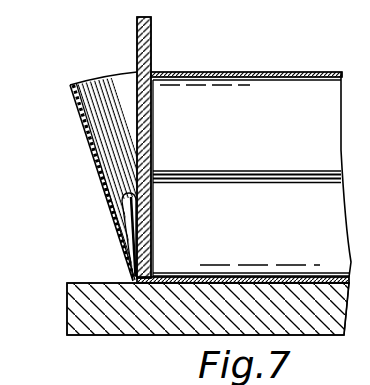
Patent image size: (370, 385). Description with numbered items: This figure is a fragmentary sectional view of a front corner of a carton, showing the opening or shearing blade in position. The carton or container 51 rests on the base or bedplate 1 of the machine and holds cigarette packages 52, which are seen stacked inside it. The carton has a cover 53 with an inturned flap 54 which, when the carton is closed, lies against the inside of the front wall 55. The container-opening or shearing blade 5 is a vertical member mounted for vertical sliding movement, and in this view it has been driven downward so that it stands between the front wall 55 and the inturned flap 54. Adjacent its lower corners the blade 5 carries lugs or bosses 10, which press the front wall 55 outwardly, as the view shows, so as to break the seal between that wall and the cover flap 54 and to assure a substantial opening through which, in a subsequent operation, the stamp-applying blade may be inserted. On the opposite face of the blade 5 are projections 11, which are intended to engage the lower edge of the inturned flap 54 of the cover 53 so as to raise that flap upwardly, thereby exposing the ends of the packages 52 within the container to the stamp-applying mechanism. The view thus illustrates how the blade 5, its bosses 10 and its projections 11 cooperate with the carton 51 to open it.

The base or bedplate 1 is at (76, 307).
The container-opening or shearing blade 5 is at (151, 44).
The lugs or bosses 10 is at (130, 237).
The projections 11 is at (151, 213).
The carton or container 51 is at (188, 283).
The cigarette packages 52 is at (303, 146).
The cover 53 is at (272, 76).
The inturned flap 54 is at (152, 128).
The front wall 55 is at (95, 159).